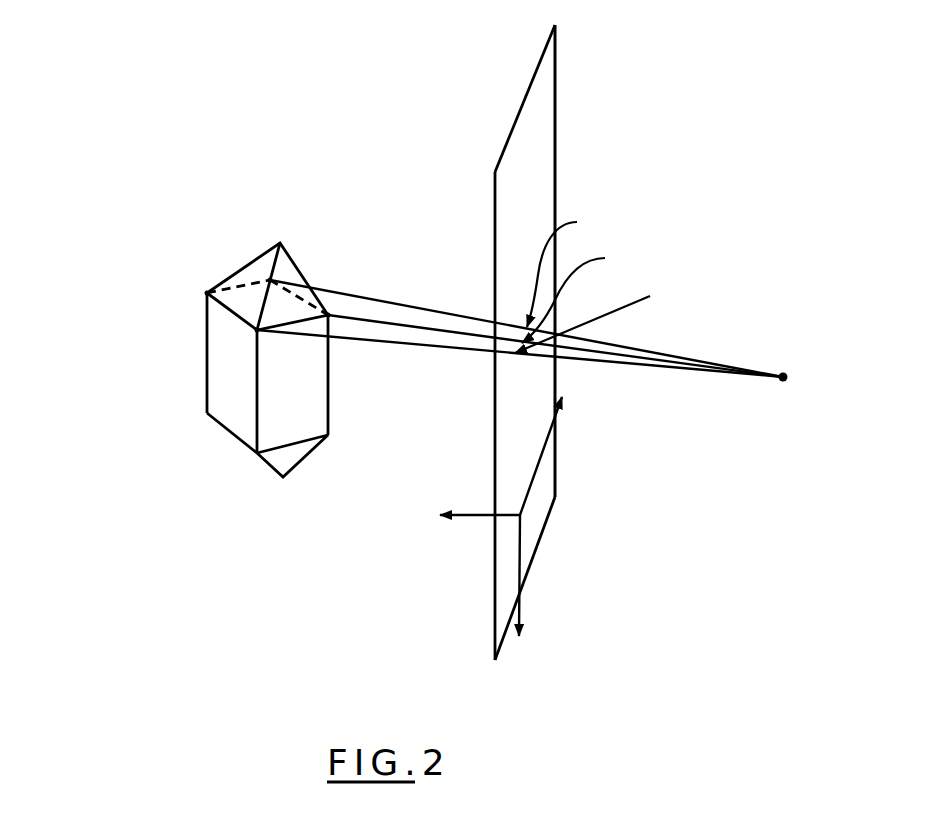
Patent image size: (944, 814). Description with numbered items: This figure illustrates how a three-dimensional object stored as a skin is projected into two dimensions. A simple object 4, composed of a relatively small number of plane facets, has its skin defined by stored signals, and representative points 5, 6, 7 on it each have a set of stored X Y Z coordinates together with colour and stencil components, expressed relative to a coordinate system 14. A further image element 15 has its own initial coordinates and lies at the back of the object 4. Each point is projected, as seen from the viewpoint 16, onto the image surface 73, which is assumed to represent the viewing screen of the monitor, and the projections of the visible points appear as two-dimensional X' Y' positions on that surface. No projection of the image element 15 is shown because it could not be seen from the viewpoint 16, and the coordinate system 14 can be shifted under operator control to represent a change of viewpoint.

The object 4 is at (220, 450).
The representative point (X1 Y1 Z1) 5 is at (243, 335).
The representative point (X2 Y2 Z2) 6 is at (328, 310).
The representative point (X3 Y3 Z3) 7 is at (283, 268).
The image element (X4 Y4 Z4) 15 is at (197, 288).
The coordinate system 14 is at (485, 545).
The image surface 73 is at (556, 137).
The viewpoint 16 is at (803, 380).